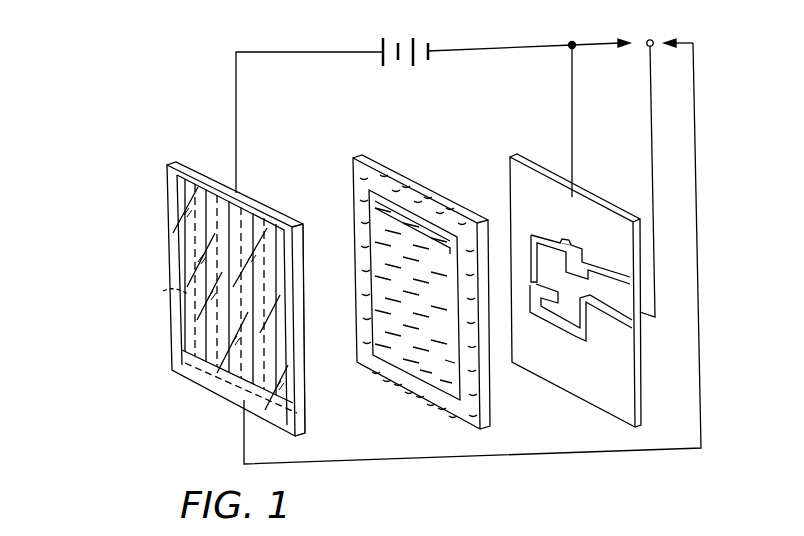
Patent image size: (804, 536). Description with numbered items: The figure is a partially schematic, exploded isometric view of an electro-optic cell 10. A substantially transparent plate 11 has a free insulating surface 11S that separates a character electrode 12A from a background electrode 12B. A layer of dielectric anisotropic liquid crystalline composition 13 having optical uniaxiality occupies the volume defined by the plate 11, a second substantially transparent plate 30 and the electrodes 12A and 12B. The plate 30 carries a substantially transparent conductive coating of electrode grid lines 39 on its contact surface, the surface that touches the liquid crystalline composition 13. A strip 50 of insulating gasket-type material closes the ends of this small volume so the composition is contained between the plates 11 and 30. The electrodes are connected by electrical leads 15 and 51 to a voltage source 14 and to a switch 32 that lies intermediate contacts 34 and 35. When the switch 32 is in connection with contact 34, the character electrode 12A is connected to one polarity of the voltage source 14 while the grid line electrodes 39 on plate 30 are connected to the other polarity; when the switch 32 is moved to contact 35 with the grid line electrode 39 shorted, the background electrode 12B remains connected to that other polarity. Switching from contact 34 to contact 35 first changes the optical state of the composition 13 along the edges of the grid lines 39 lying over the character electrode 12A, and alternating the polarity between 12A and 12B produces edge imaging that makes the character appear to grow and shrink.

The electro-optic cell 10 is at (96, 194).
The substantially transparent plate 11 is at (640, 405).
The free insulating surface 11S is at (568, 235).
The character electrode 12A is at (560, 320).
The background electrode 12B is at (577, 204).
The layer of dielectric anisotropic liquid crystalline composition 13 is at (382, 219).
The voltage source 14 is at (381, 44).
The electrical leads 15 is at (236, 110).
The substantially transparent plate 30 is at (167, 226).
The switch 32 is at (650, 38).
The contact 34 is at (627, 41).
The contact 35 is at (666, 35).
The electrode grid lines 39 is at (166, 292).
The strip of insulating gasket-type material 50 is at (386, 160).
The electrical leads 51 is at (302, 237).